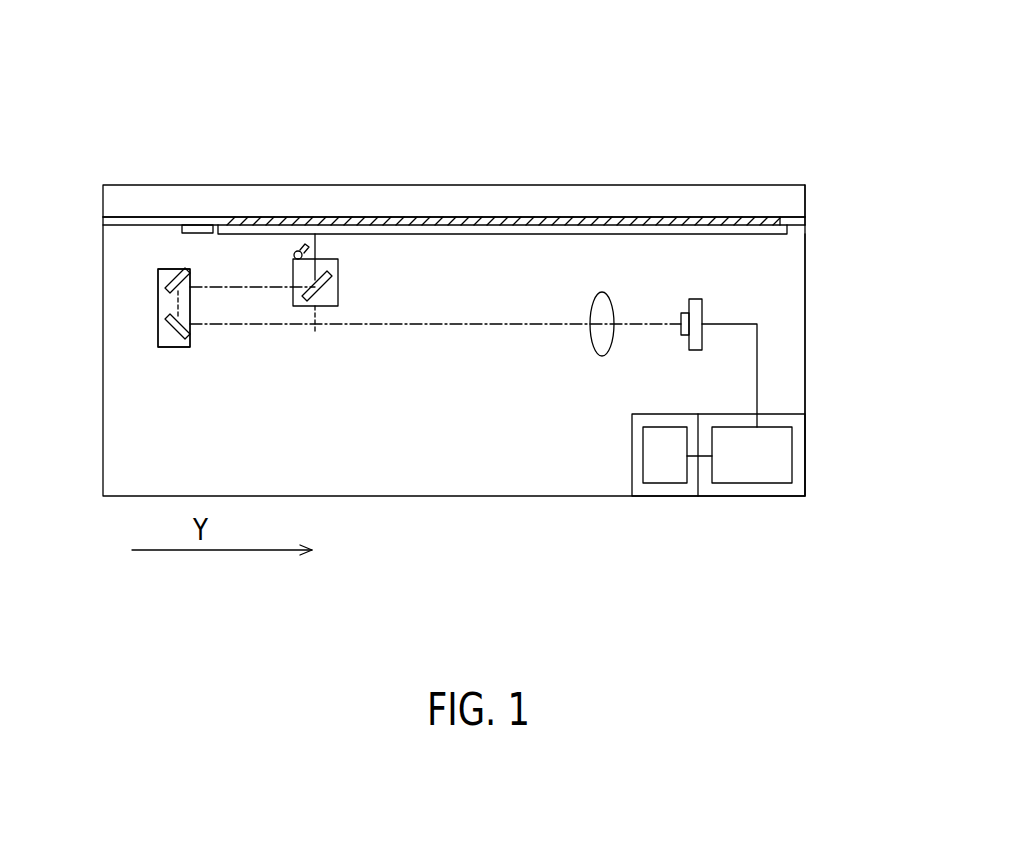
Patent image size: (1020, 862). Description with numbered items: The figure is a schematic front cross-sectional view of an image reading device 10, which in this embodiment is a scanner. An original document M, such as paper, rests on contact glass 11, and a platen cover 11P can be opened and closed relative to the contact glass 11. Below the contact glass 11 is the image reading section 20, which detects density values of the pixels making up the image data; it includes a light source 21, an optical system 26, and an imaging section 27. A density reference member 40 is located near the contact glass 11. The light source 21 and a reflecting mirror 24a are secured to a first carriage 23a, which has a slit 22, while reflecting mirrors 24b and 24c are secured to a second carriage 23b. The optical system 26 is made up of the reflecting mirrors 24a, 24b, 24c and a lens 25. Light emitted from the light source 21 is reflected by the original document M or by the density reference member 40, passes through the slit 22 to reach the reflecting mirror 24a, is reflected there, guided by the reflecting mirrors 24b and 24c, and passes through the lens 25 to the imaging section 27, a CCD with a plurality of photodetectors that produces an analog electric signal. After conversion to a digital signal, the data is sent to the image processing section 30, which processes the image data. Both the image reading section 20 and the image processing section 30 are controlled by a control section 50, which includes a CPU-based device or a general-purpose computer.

The image reading device 10 is at (762, 83).
The contact glass 11 is at (675, 228).
The platen cover 11P is at (787, 194).
The original document M is at (513, 218).
The image reading section 20 is at (815, 332).
The light source 21 is at (290, 251).
The slit 22 is at (328, 250).
The first carriage 23a is at (339, 288).
The second carriage 23b is at (158, 317).
The reflecting mirror 24a is at (320, 339).
The reflecting mirror 24b is at (158, 275).
The reflecting mirror 24c is at (178, 348).
The lens 25 is at (604, 350).
The optical system 26 is at (290, 400).
The imaging section 27 is at (696, 352).
The image processing section 30 is at (792, 452).
The density reference member 40 is at (186, 233).
The control section 50 is at (661, 485).